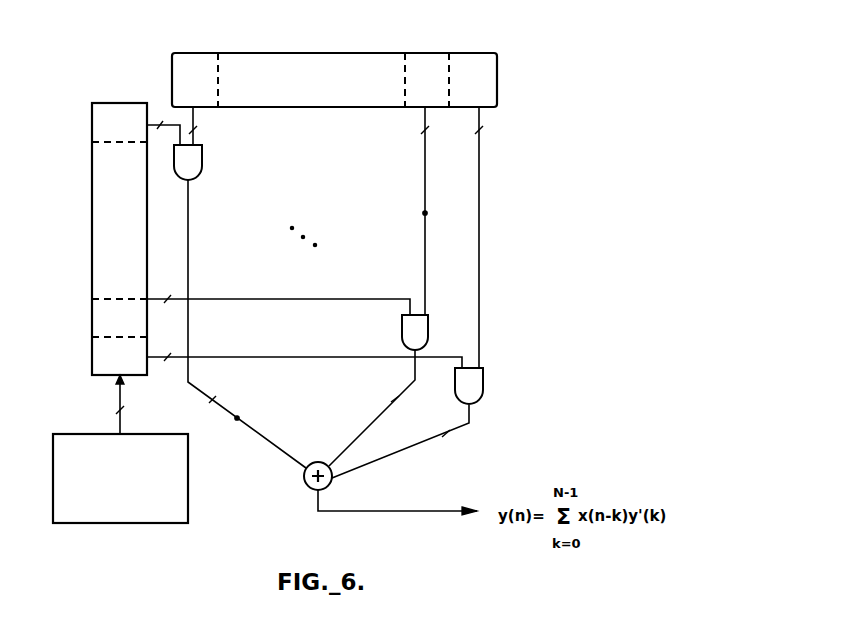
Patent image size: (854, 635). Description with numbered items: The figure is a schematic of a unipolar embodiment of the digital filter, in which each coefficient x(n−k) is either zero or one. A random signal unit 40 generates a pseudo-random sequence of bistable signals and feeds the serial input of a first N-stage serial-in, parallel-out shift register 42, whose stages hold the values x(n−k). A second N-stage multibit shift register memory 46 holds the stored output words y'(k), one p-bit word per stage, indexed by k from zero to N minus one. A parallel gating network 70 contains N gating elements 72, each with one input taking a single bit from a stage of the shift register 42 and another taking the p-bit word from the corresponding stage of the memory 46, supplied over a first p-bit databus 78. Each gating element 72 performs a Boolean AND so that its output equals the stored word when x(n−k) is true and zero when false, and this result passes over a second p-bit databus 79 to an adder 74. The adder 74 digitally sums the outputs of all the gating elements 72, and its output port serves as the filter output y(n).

The random signal unit 40 is at (157, 434).
The first N-stage shift register 42 is at (92, 191).
The shift register memory 46 is at (315, 53).
The parallel gating network 70 is at (548, 220).
The gating element 72 is at (428, 331).
The adder 74 is at (331, 486).
The first p-bit databus 78 is at (424, 213).
The second p-bit databus 79 is at (239, 418).